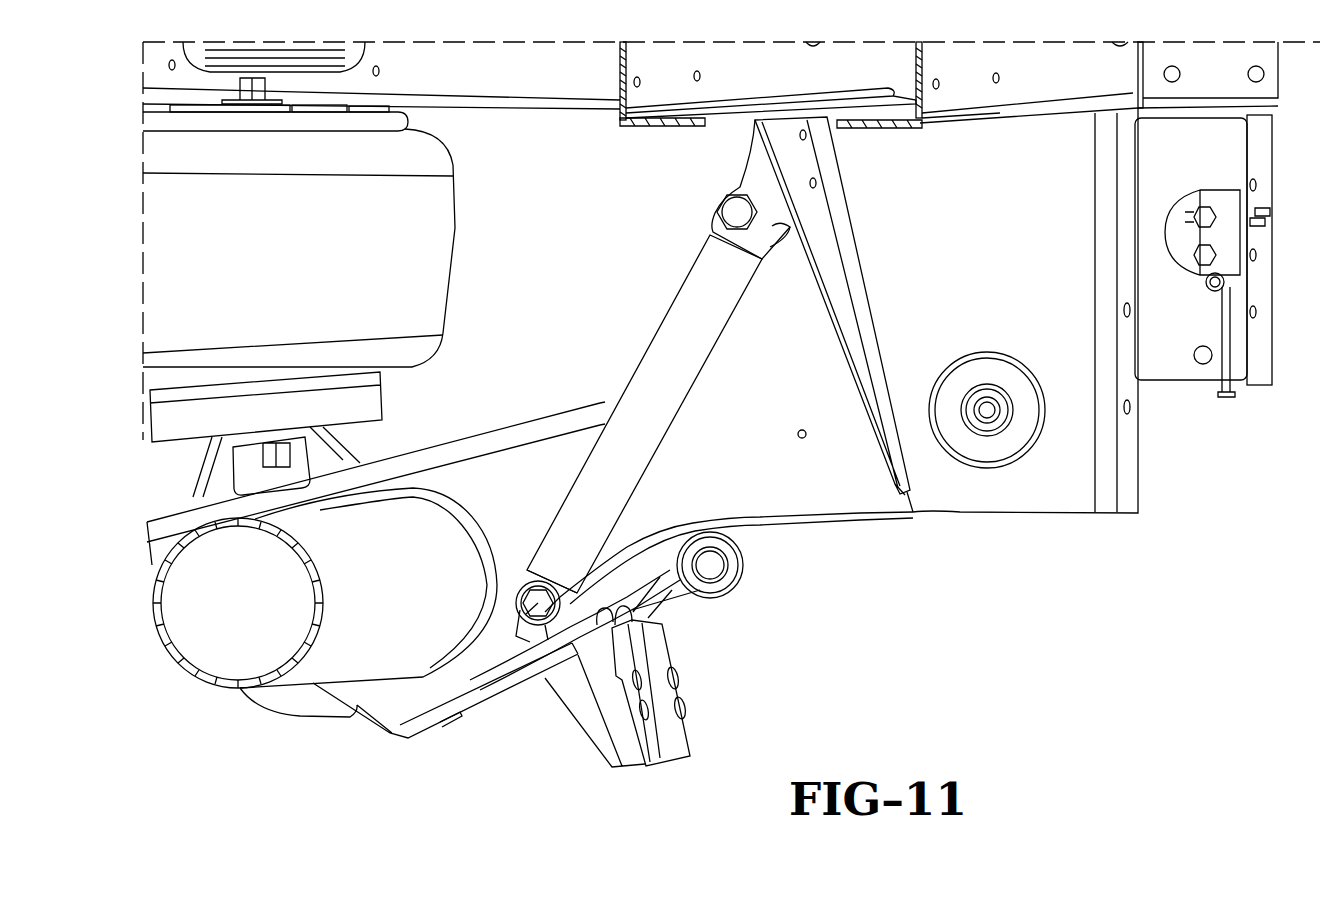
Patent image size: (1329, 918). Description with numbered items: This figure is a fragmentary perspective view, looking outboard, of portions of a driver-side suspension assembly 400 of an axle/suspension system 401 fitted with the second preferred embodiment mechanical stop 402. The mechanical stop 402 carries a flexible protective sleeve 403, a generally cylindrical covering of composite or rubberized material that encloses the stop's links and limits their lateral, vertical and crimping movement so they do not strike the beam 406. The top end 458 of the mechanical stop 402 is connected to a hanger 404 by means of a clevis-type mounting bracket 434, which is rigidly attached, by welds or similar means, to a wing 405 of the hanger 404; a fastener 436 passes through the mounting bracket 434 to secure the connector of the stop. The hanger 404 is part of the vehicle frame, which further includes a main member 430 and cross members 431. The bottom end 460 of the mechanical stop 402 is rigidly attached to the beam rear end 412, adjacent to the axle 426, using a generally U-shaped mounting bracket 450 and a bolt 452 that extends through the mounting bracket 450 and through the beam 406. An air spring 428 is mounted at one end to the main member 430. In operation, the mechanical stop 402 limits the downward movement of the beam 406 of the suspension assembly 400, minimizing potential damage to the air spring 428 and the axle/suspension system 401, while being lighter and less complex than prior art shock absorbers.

The suspension assembly 400 is at (1148, 527).
The axle/suspension system 401 is at (974, 627).
The second preferred embodiment mechanical stop 402 is at (618, 364).
The flexible protective sleeve 403 is at (655, 464).
The hanger 404 is at (1167, 170).
The wing 405 is at (797, 158).
The beam 406 is at (814, 528).
The beam rear end 412 is at (392, 474).
The axle 426 is at (351, 623).
The air spring 428 is at (457, 208).
The main member 430 is at (536, 84).
The cross member 431 is at (918, 129).
The clevis-type mounting bracket 434 is at (748, 176).
The fastener 436 is at (737, 212).
The generally U-shaped mounting bracket 450 is at (560, 598).
The bolt 452 is at (507, 628).
The top end 458 is at (712, 228).
The bottom end 460 is at (524, 548).